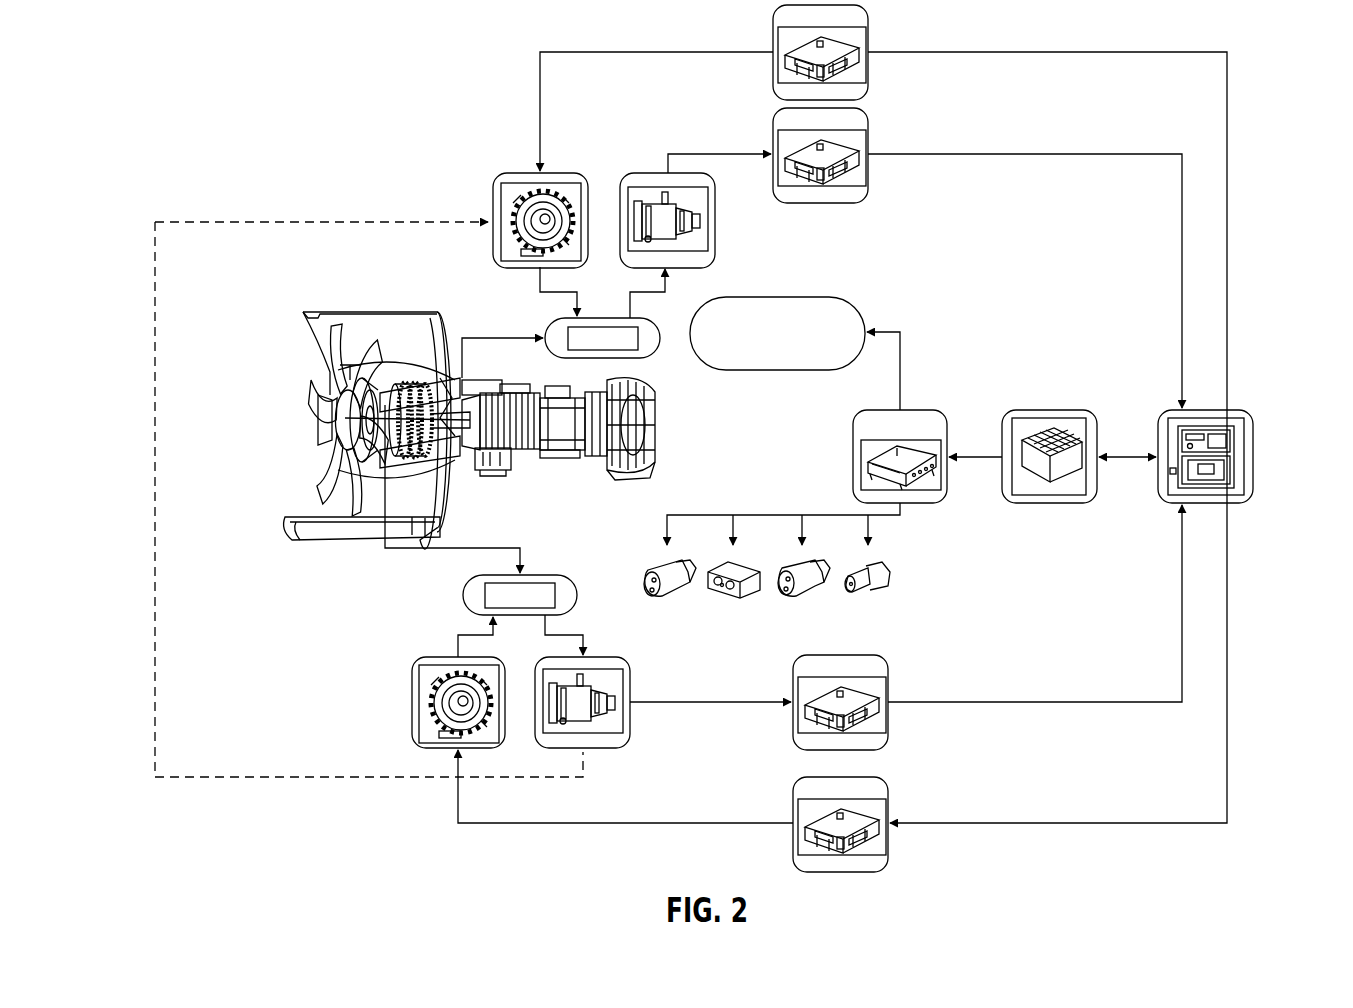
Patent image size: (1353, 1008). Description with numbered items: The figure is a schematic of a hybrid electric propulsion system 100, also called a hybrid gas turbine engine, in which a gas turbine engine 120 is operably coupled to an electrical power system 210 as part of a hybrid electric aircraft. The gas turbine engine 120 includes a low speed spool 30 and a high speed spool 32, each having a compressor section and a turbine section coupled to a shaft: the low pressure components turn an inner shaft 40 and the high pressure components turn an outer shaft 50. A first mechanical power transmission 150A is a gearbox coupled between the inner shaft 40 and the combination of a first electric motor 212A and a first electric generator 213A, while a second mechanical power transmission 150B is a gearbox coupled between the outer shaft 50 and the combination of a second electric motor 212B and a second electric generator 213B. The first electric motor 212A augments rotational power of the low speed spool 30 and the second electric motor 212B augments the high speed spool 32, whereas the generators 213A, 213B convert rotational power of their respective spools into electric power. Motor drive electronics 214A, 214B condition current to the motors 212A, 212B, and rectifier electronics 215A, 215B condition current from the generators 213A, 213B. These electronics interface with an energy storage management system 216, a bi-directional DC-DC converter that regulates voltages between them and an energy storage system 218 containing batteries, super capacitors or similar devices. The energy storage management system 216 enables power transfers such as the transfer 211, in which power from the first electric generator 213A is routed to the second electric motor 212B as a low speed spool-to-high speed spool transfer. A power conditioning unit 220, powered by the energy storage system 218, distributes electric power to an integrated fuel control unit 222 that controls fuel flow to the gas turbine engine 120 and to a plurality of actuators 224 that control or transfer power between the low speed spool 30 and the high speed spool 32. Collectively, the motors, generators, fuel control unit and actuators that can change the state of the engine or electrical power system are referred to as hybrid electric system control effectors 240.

The hybrid electric propulsion system 100 is at (345, 98).
The gas turbine engine 120 is at (428, 397).
The low speed spool 30 is at (410, 380).
The inner shaft 40 is at (320, 397).
The outer shaft 50 is at (478, 452).
The high speed spool 32 is at (567, 420).
The first mechanical power transmission 150A is at (463, 596).
The second mechanical power transmission 150B is at (548, 326).
The electrical power system 210 is at (862, 276).
The power transfer 211 is at (153, 448).
The first electric motor 212A is at (412, 700).
The second electric motor 212B is at (522, 173).
The first electric generator 213A is at (632, 716).
The second electric generator 213B is at (648, 173).
The motor drive electronics 214A is at (888, 806).
The motor drive electronics 214B is at (868, 45).
The rectifier electronics 215A is at (888, 683).
The rectifier electronics 215B is at (868, 148).
The energy storage management system 216 is at (1253, 458).
The energy storage system 218 is at (1050, 410).
The power conditioning unit 220 is at (920, 410).
The integrated fuel control unit 222 is at (776, 297).
The actuators 224 is at (920, 578).
The hybrid electric system control effectors 240 is at (1049, 281).